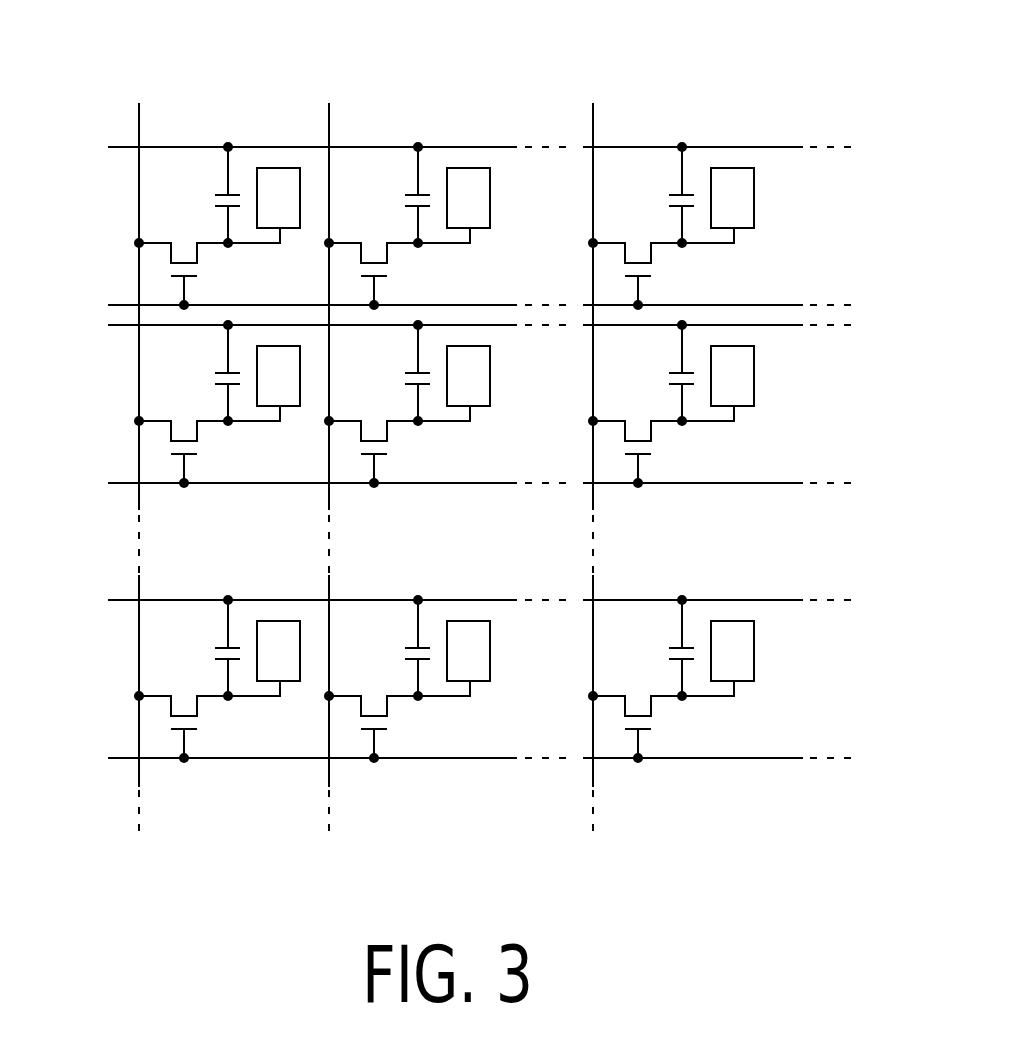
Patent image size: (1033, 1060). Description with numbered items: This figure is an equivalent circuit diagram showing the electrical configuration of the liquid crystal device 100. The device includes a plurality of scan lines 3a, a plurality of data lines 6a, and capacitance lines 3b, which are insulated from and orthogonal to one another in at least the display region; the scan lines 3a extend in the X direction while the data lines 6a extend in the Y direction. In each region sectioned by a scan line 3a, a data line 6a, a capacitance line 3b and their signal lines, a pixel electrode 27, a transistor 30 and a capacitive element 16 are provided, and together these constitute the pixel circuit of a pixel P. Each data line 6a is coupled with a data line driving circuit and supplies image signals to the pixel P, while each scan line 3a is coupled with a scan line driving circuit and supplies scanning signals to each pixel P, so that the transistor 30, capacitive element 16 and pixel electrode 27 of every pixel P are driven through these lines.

The liquid crystal device 100 is at (727, 82).
The data line 6a is at (140, 118).
The capacitance line 3b is at (786, 145).
The scan line 3a is at (786, 302).
The capacitive element 16 is at (214, 199).
The pixel electrode 27 is at (285, 229).
The transistor 30 is at (203, 270).
The pixel P is at (778, 199).